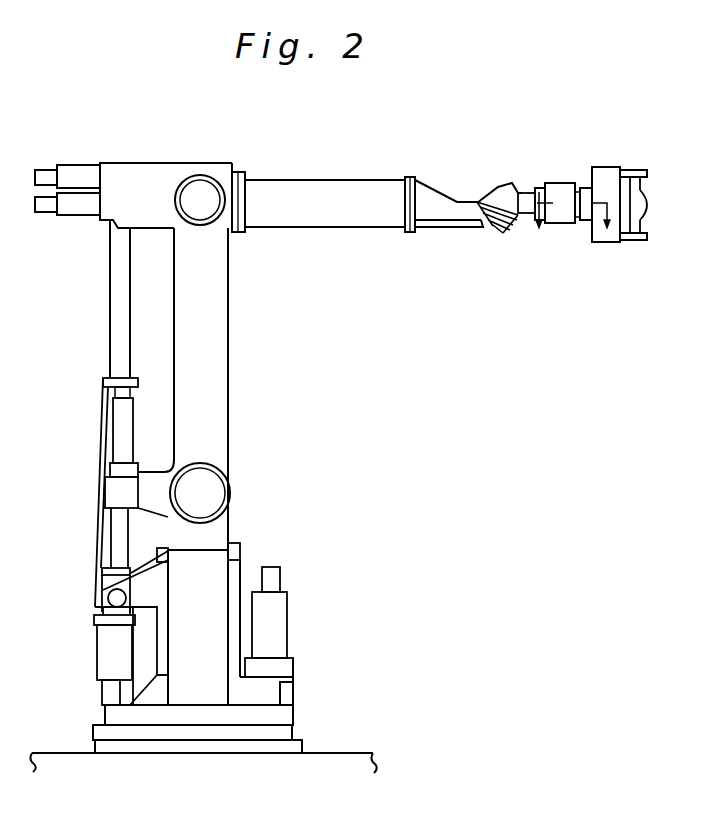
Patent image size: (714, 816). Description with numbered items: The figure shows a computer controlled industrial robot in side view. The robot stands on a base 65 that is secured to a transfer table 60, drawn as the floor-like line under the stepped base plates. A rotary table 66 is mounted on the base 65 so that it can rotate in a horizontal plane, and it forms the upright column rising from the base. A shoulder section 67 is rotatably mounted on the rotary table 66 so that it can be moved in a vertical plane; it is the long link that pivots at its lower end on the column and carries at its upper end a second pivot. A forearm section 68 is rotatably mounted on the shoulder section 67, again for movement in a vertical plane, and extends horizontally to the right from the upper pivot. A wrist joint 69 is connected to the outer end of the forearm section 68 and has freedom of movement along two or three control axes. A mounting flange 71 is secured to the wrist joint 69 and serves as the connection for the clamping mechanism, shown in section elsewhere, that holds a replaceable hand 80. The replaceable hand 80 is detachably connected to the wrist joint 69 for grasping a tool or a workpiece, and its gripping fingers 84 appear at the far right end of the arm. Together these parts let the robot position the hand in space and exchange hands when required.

The transfer table 60 is at (55, 757).
The base 65 is at (235, 733).
The rotary table 66 is at (223, 575).
The shoulder section 67 is at (220, 332).
The forearm section 68 is at (290, 218).
The wrist joint 69 is at (476, 189).
The mounting flange 71 is at (546, 186).
The replaceable hand 80 is at (606, 164).
The gripper fingers 84 is at (648, 172).